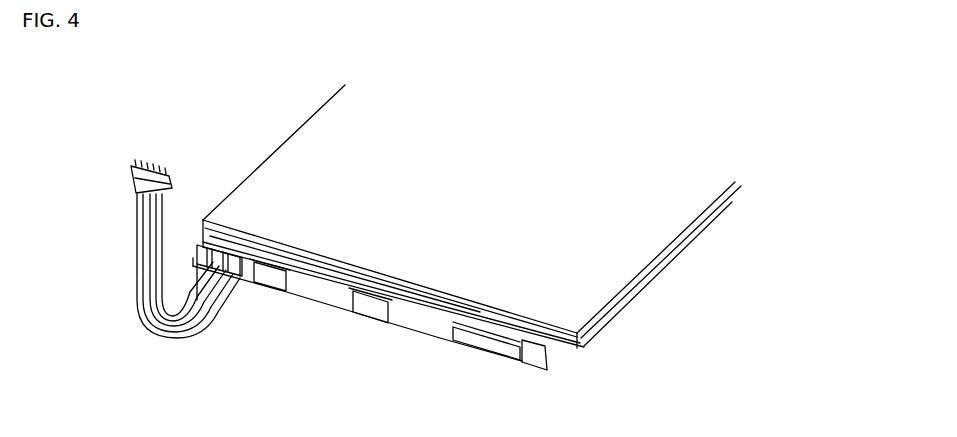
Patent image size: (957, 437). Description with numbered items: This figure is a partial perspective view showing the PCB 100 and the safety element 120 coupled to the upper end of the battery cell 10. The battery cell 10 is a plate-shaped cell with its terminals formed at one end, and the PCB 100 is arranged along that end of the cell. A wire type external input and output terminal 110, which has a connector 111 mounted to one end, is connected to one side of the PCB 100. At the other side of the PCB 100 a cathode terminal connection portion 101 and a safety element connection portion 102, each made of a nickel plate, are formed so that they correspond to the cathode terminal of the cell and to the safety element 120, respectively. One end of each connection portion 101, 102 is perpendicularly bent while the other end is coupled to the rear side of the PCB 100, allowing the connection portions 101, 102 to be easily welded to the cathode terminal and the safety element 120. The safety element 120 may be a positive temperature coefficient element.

The battery cell 10 is at (443, 165).
The PCB 100 is at (432, 323).
The cathode terminal connection portion 101 is at (345, 264).
The safety element connection portion 102 is at (548, 345).
The wire type external input and output terminal 110 is at (134, 248).
The connector 111 is at (132, 188).
The safety element 120 is at (503, 323).